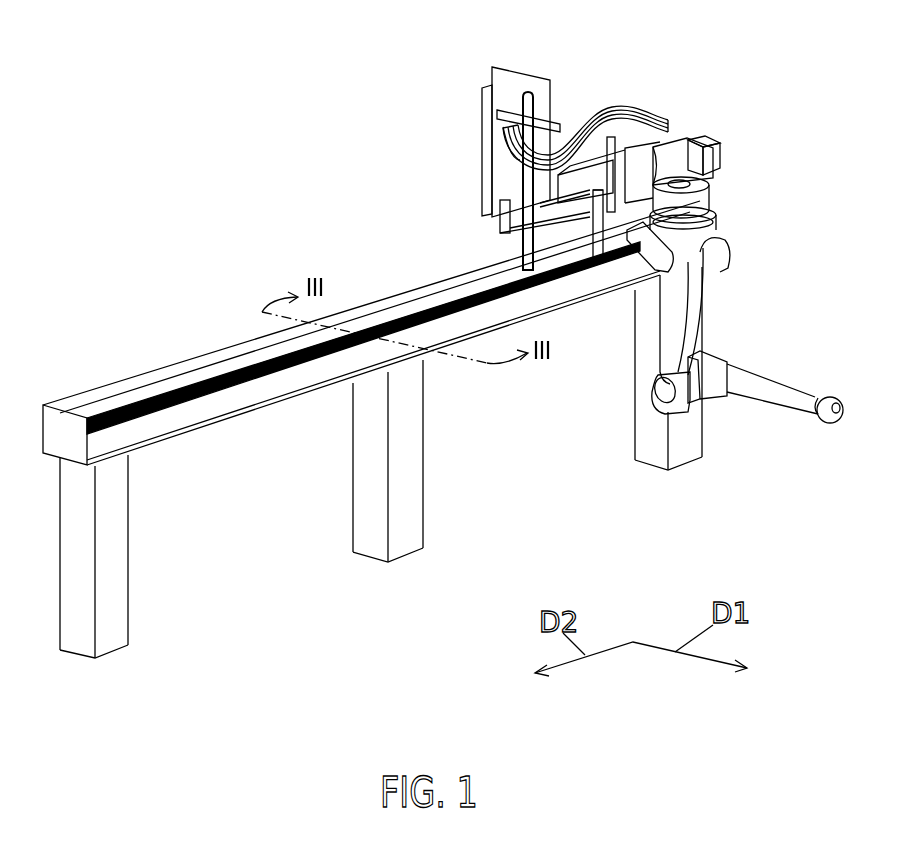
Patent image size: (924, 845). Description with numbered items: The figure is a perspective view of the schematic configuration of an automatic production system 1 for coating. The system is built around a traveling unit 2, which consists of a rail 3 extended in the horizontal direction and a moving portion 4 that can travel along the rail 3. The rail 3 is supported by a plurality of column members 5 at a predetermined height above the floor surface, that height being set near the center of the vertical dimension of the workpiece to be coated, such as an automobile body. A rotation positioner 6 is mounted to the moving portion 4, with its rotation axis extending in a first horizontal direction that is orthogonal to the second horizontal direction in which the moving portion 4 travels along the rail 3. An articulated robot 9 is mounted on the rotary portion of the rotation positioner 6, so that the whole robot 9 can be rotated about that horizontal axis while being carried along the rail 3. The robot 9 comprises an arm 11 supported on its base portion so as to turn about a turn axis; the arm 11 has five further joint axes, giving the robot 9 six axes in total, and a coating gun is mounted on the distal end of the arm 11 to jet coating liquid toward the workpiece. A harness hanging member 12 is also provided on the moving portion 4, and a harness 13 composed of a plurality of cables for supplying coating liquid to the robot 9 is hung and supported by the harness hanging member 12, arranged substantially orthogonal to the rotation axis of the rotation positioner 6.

The automatic production system 1 is at (253, 107).
The traveling unit 2 is at (371, 307).
The rail 3 is at (365, 335).
The moving portion 4 is at (567, 222).
The column member 5 is at (122, 590).
The rotation positioner 6 is at (573, 188).
The articulated robot 9 is at (770, 352).
The arm 11 is at (785, 400).
The harness hanging member 12 is at (513, 72).
The harness 13 is at (620, 122).